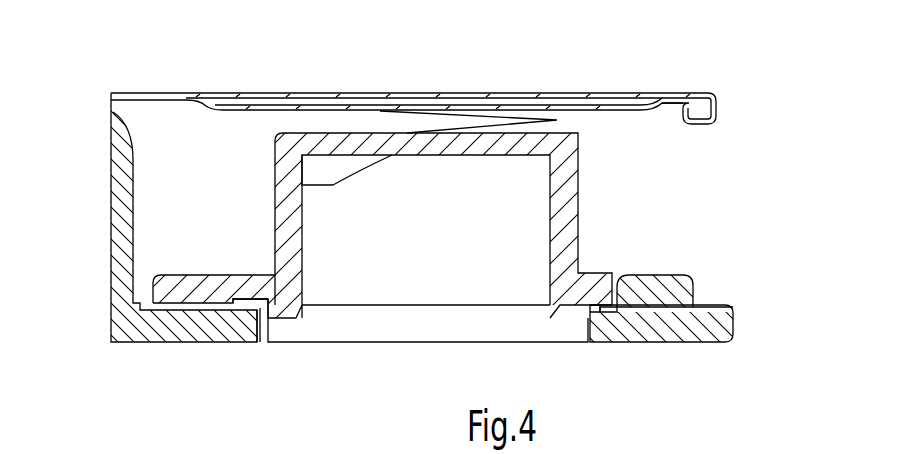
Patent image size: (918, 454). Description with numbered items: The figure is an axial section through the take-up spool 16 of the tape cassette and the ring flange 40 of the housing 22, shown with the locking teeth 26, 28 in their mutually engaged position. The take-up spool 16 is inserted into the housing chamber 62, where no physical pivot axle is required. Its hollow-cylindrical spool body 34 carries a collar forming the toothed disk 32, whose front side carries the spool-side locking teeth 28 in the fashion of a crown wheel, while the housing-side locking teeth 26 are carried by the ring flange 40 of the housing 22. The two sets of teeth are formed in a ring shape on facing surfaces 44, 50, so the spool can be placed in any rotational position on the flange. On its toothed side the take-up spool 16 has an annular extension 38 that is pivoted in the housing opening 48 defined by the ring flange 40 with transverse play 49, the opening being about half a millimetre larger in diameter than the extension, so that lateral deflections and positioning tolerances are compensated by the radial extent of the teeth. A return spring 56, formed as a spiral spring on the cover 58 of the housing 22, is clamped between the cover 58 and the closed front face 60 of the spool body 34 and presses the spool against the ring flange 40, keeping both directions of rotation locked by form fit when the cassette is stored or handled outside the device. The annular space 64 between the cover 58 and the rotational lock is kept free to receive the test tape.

The take-up spool 16 is at (588, 157).
The housing 22 is at (108, 180).
The locking teeth 26 is at (734, 304).
The locking teeth 28 is at (666, 316).
The toothed disk 32 is at (152, 290).
The spool body 34 is at (560, 207).
The annular extension 38 is at (288, 314).
The ring flange 40 is at (627, 343).
The facing surface 44 is at (708, 306).
The housing opening 48 is at (260, 322).
The transverse play 49 is at (257, 310).
The facing surface 50 is at (625, 308).
The return spring 56 is at (552, 118).
The cover 58 is at (612, 112).
The closed front face 60 is at (367, 133).
The housing chamber 62 is at (167, 124).
The annular space 64 is at (598, 237).